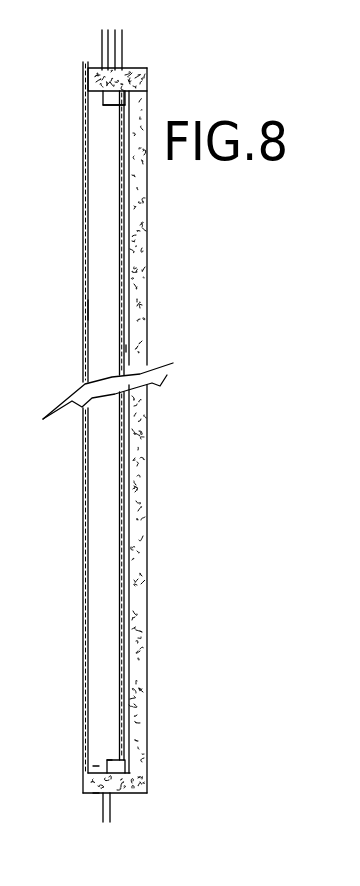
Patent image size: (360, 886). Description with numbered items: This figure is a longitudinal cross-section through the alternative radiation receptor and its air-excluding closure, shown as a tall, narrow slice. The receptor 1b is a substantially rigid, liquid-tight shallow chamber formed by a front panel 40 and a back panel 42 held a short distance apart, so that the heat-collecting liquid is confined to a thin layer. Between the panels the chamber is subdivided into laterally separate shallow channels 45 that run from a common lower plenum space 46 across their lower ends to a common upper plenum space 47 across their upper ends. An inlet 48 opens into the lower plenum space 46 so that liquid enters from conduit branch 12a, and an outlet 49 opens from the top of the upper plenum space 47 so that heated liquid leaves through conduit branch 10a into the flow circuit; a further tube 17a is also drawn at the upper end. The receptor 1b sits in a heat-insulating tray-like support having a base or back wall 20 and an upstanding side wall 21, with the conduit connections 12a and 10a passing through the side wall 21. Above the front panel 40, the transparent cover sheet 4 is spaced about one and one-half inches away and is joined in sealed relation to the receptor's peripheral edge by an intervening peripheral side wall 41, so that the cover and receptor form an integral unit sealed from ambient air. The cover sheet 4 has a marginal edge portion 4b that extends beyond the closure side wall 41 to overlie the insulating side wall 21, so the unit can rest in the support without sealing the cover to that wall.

The receptor 1b is at (118, 310).
The transparent cover sheet 4 is at (88, 463).
The marginal edge portion 4b is at (88, 62).
The conduit branch 10a is at (101, 40).
The conduit branch 12a is at (113, 806).
The vent tube 17a is at (123, 43).
The base or back wall 20 is at (143, 497).
The upstanding side wall 21 is at (95, 795).
The front panel 40 is at (110, 260).
The peripheral side wall 41 is at (93, 766).
The back panel 42 is at (133, 297).
The shallow channels 45 is at (127, 349).
The lower plenum space 46 is at (125, 763).
The upper plenum space 47 is at (127, 104).
The inlet 48 is at (108, 758).
The outlet 49 is at (103, 107).